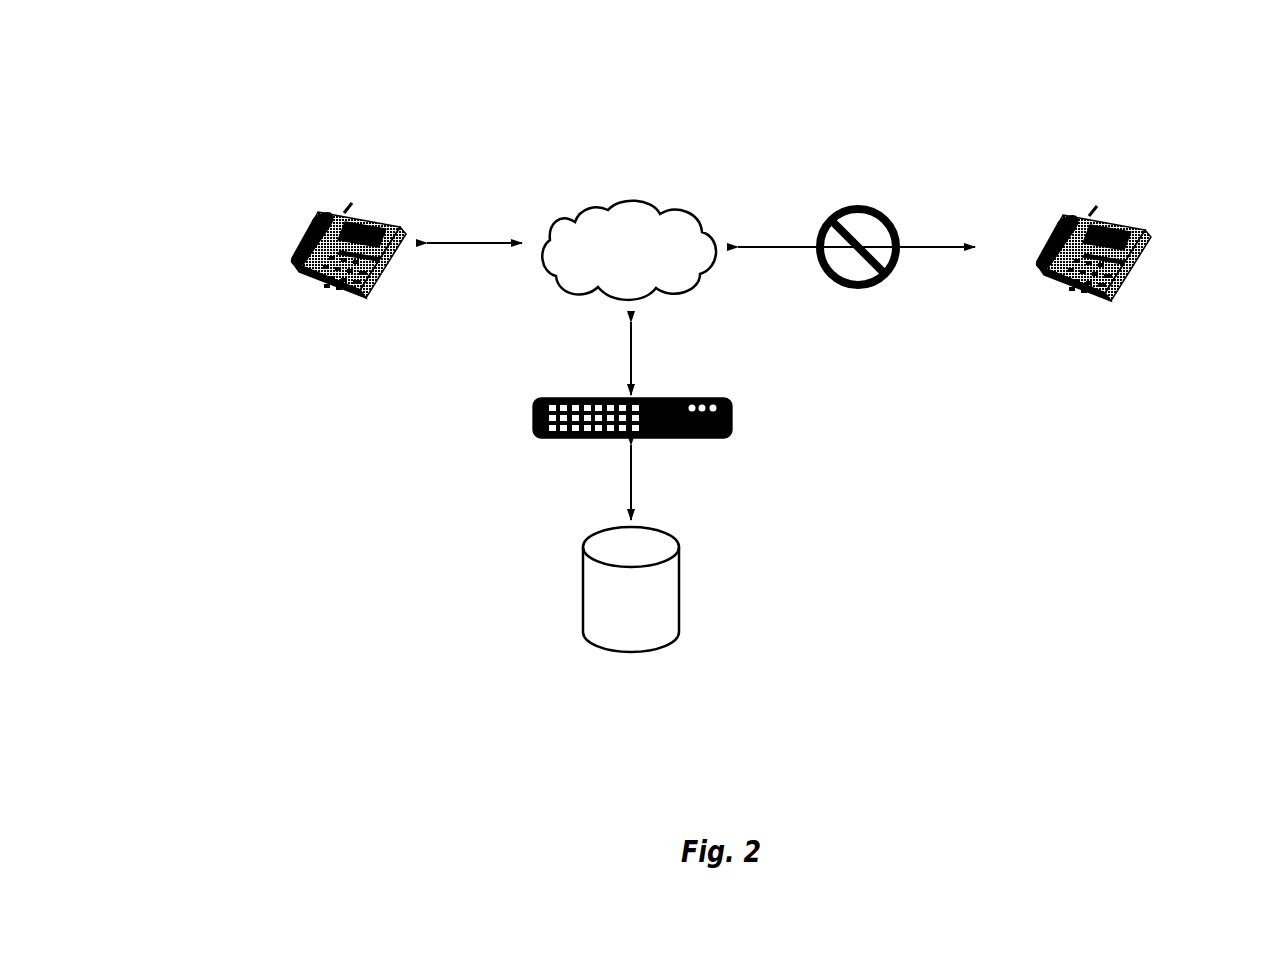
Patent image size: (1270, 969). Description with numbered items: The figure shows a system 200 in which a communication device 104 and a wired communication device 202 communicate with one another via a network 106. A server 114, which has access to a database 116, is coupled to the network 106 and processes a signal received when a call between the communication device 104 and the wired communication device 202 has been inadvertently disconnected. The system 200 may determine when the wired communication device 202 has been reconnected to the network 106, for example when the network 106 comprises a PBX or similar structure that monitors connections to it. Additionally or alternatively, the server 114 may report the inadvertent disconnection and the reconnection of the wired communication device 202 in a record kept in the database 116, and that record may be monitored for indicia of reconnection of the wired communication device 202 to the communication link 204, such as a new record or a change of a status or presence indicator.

The system 200 is at (207, 92).
The communication device 104 is at (366, 223).
The network 106 is at (592, 204).
The server 114 is at (686, 397).
The database 116 is at (662, 535).
The wired communication device 202 is at (1128, 228).
The communication link 204 is at (902, 188).